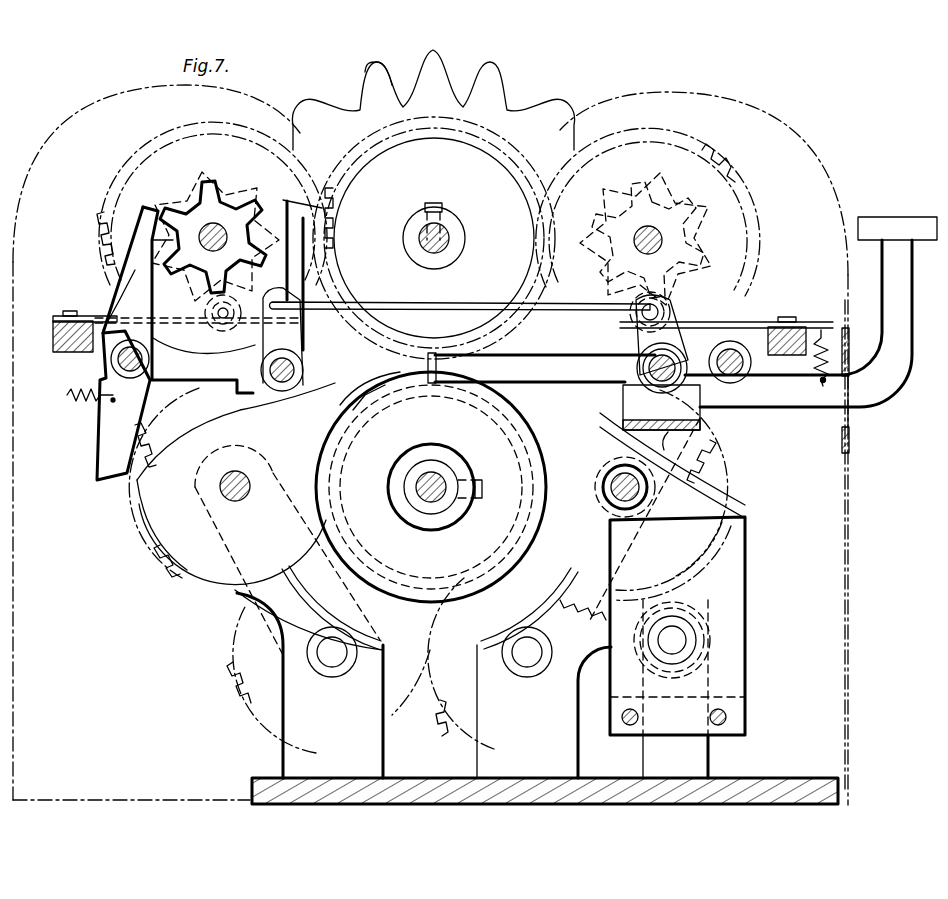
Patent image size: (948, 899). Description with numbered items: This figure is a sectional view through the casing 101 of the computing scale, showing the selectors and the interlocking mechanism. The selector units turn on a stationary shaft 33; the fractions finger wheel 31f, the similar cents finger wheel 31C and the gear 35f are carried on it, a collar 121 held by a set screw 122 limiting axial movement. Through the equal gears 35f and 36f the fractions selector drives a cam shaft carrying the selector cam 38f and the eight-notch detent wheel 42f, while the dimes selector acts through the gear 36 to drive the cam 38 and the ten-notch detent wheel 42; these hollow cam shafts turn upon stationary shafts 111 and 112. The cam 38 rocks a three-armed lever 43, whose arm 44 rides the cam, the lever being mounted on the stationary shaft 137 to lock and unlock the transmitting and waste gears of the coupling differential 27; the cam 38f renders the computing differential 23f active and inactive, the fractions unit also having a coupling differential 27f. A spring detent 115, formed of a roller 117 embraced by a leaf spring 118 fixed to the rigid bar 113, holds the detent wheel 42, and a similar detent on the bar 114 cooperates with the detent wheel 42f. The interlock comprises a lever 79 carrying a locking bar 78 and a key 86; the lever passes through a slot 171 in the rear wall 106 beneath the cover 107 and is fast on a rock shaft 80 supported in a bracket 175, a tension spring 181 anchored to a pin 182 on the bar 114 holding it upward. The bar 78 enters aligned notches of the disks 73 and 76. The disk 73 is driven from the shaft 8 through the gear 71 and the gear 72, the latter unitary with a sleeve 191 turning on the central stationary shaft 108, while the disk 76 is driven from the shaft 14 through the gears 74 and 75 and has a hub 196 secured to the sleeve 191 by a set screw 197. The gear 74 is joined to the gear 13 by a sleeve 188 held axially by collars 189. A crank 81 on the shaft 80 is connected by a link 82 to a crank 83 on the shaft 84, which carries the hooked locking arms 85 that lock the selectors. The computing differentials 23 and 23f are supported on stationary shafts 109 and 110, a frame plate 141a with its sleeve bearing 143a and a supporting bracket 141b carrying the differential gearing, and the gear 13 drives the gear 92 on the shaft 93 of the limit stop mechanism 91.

The casing 101 is at (848, 560).
The gear 36 is at (104, 232).
The detent wheel 42 is at (170, 198).
The cam 38 is at (203, 185).
The stationary shaft 111 is at (220, 230).
The arm 44 is at (145, 215).
The roller 117 is at (214, 313).
The spring detent 115 is at (108, 305).
The leaf spring 118 is at (108, 312).
The rigid bar 113 is at (65, 350).
The stationary shaft 137 is at (142, 362).
The three-armed lever 43 is at (100, 420).
The finger wheel 31f is at (443, 60).
The sprocket tooth 31C is at (372, 68).
The gear 35f is at (328, 200).
The collar 121 is at (410, 228).
The stationary shaft 33 is at (449, 238).
The set screw 122 is at (434, 204).
The hooked locking arm 85 is at (305, 254).
The gear 36f is at (718, 166).
The detent wheel 42f is at (725, 204).
The selector cam 38f is at (612, 208).
The stationary shaft 112 is at (650, 228).
The link 82 is at (463, 302).
The crank 83 is at (290, 331).
The shaft 84 is at (298, 388).
The crank 81 is at (670, 318).
The rock shaft 80 is at (655, 385).
The bracket 175 is at (676, 425).
The lever 79 is at (822, 408).
The key 86 is at (891, 217).
The locking bar 78 is at (428, 360).
The notched disk 76 is at (400, 383).
The notched disk 73 is at (363, 402).
The rigid bar 114 is at (745, 375).
The stationary pin 182 is at (812, 325).
The tension spring 181 is at (818, 368).
The cover 107 is at (850, 332).
The back wall 106 is at (850, 446).
The slot 171 is at (850, 418).
The gear 72 is at (318, 530).
The hub 196 is at (423, 452).
The sleeve 191 is at (413, 475).
The central stationary shaft 108 is at (432, 496).
The set screw 197 is at (480, 480).
The gear 71 is at (162, 552).
The coupling differential 27 is at (146, 428).
The gear 75 is at (318, 440).
The shaft 8 is at (233, 497).
The gear teeth 27f is at (722, 444).
The gear 74 is at (570, 612).
The shaft 14 is at (624, 500).
The collars 189 is at (606, 475).
The sleeve 188 is at (600, 508).
The gear 13 is at (735, 582).
The limit stop mechanism 91 is at (752, 630).
The shaft 93 is at (685, 630).
The gear 92 is at (676, 680).
The stationary frame plate 141a is at (283, 762).
The supporting bracket 141b is at (560, 760).
The stationary shaft 109 is at (328, 660).
The sleeve bearing 143a is at (338, 665).
The stationary shaft 110 is at (525, 660).
The computing differential 23 is at (230, 697).
The computing differential 23f is at (445, 725).